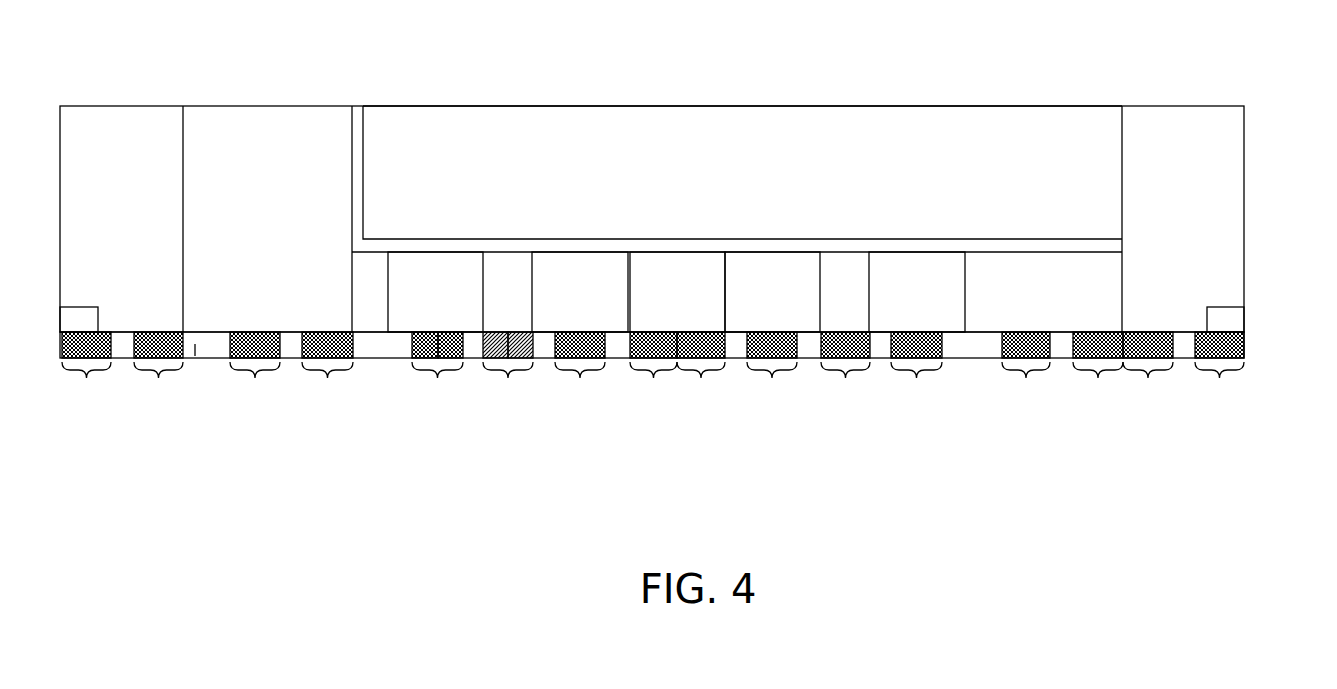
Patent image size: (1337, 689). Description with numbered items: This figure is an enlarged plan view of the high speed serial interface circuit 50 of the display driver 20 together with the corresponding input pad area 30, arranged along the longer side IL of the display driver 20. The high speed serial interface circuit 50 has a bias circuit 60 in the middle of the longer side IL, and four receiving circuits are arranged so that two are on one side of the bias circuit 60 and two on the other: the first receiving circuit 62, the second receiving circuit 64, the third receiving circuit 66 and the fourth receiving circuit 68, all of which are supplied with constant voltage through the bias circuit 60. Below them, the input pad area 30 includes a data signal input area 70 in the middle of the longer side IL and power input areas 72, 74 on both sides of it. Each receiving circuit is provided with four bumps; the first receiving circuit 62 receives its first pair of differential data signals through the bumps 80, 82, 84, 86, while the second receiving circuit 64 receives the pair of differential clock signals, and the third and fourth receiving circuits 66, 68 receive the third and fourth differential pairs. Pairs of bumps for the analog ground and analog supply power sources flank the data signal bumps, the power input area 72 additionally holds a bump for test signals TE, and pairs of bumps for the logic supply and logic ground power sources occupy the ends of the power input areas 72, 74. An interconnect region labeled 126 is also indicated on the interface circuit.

The display driver 20 is at (1283, 62).
The input pad area 30 is at (683, 424).
The high speed serial interface circuit 50 is at (1250, 105).
The bias circuit 60 is at (681, 266).
The first receiving circuit 62 is at (437, 266).
The second receiving circuit 64 is at (580, 266).
The third receiving circuit 66 is at (772, 265).
The fourth receiving circuit 68 is at (919, 265).
The data signal input area 70 is at (678, 425).
The power input area 72 is at (208, 403).
The power input area 74 is at (1250, 331).
The bump 80 is at (413, 344).
The bump 82 is at (466, 345).
The bump 84 is at (483, 345).
The bump 86 is at (529, 413).
The interconnect layer region 126 is at (614, 117).
The longer side IL is at (1072, 105).
The bump for test signals TE is at (206, 382).